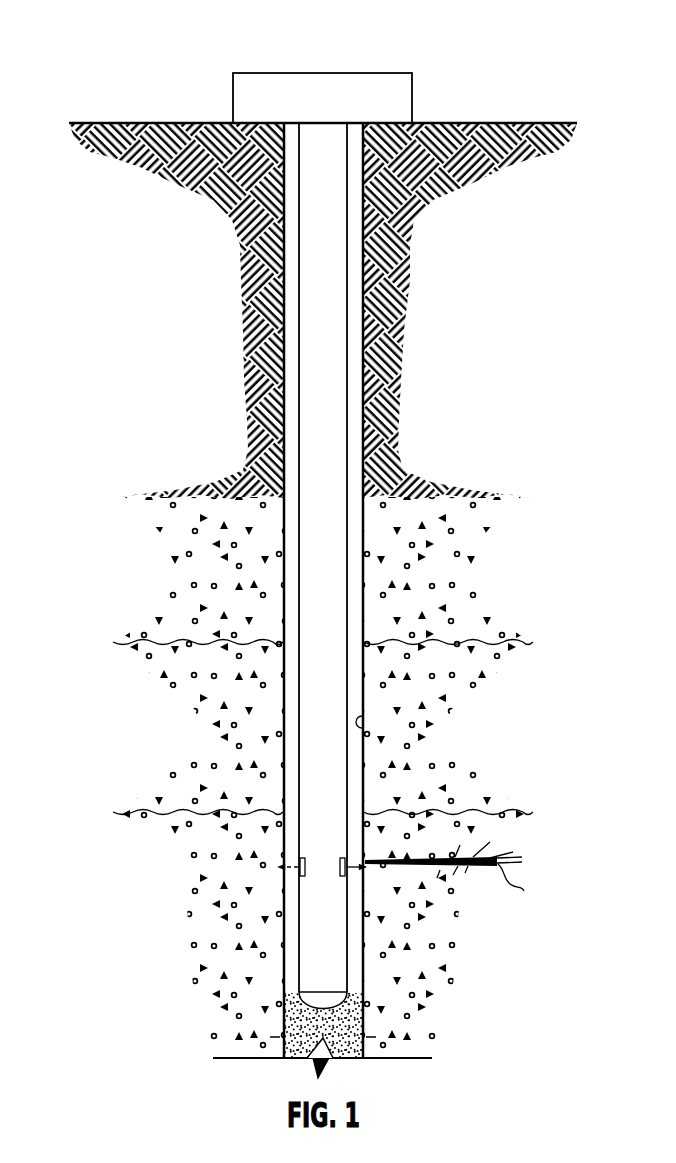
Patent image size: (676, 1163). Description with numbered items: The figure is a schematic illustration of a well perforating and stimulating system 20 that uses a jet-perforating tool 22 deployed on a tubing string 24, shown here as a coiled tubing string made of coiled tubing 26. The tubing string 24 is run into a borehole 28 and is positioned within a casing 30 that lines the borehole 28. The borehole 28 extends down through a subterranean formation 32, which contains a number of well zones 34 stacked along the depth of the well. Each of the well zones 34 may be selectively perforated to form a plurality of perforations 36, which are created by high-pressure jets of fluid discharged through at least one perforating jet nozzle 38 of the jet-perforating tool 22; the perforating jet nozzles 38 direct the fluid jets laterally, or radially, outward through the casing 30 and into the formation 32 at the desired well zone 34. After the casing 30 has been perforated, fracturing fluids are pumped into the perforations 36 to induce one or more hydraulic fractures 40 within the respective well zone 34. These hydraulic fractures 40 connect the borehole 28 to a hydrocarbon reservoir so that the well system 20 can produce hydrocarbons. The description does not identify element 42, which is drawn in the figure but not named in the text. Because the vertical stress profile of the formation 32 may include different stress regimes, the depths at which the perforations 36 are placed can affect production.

The well perforating and stimulating system 20 is at (118, 44).
The jet-perforating tool 22 is at (352, 843).
The tubing string 24 is at (350, 318).
The coiled tubing 26 is at (322, 362).
The borehole 28 is at (291, 318).
The casing 30 is at (362, 724).
The subterranean formation 32 is at (406, 168).
The well zones 34 is at (249, 584).
The perforations 36 is at (384, 886).
The perforating jet nozzle 38 is at (344, 862).
The hydraulic fractures 40 is at (497, 860).
The upper formation layer boundary 42 is at (353, 590).